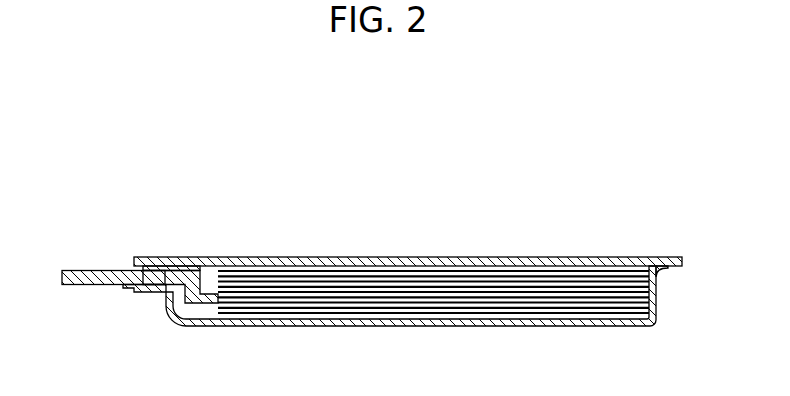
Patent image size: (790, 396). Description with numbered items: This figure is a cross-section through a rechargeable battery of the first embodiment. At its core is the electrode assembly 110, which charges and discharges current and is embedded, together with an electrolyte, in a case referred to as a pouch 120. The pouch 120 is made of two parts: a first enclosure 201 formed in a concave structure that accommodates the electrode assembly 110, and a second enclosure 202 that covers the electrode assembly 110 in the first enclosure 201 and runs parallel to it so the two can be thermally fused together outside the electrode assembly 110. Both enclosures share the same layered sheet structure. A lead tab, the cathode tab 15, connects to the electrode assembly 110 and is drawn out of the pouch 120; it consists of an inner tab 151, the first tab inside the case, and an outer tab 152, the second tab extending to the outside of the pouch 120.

The cathode tab 15 is at (95, 196).
The inner tab 151 is at (212, 292).
The outer tab 152 is at (107, 269).
The electrode assembly 110 is at (462, 273).
The pouch 120 is at (593, 196).
The first enclosure 201 is at (657, 288).
The second enclosure 202 is at (606, 257).